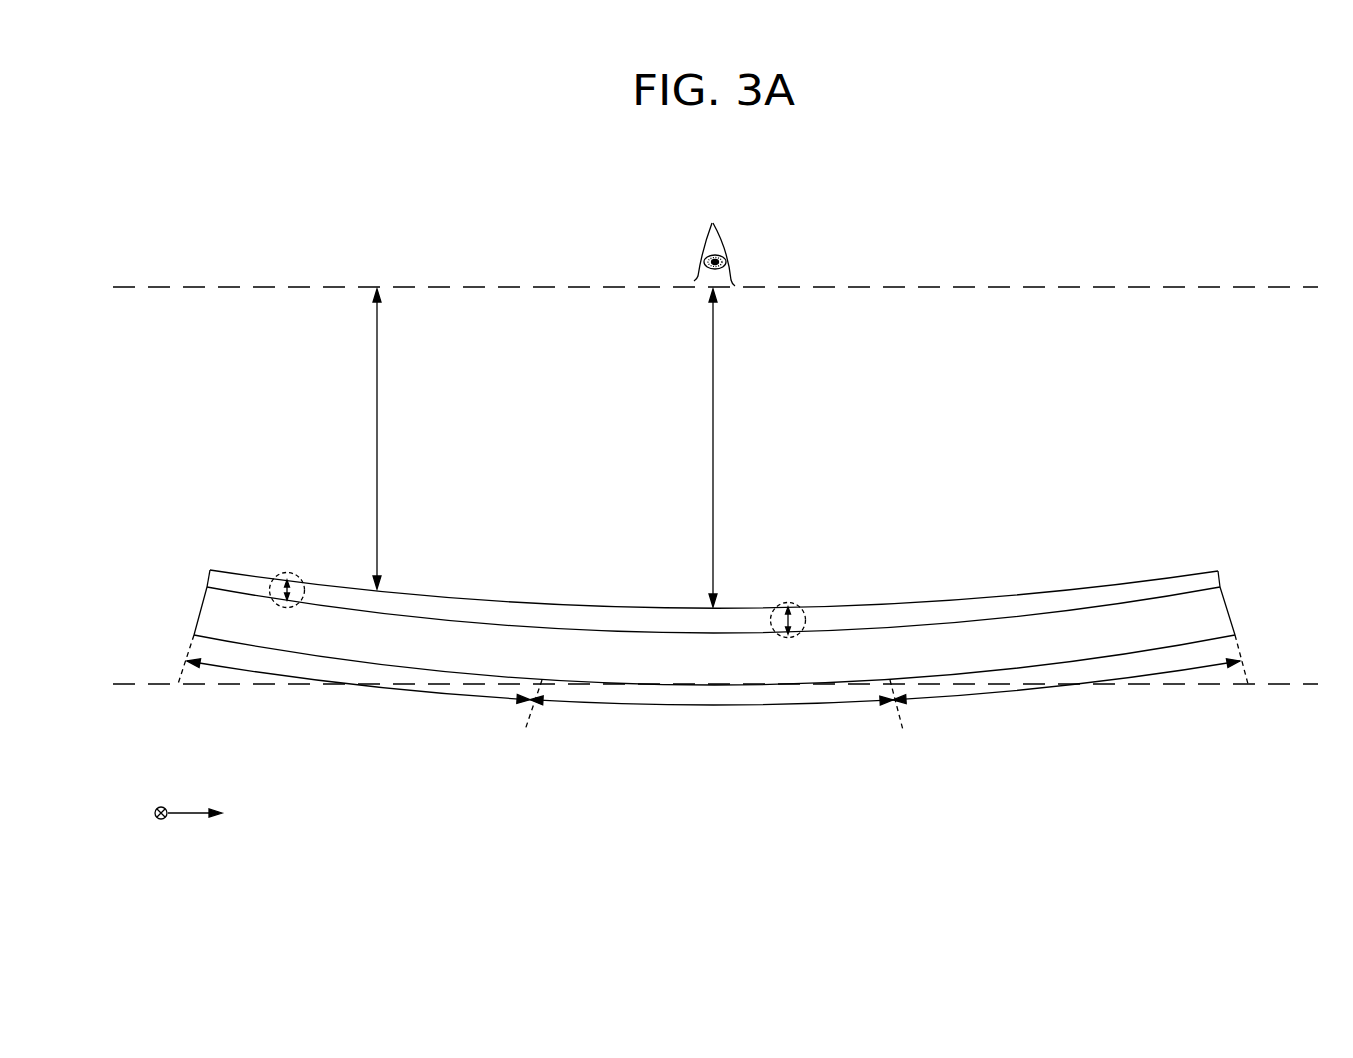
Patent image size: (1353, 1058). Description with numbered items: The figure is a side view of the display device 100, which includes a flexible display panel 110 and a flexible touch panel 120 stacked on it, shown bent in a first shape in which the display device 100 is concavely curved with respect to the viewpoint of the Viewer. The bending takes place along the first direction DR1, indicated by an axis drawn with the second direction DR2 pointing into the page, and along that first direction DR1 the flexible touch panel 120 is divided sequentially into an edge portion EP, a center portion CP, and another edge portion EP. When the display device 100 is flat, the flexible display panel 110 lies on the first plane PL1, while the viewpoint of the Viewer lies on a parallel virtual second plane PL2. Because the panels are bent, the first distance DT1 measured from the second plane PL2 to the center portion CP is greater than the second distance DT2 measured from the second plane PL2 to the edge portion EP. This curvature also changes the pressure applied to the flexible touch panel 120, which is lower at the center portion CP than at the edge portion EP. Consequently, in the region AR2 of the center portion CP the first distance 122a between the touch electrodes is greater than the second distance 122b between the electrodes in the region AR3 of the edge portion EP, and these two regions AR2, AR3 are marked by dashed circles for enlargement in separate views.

The display device 100 is at (739, 569).
The flexible display panel 110 is at (1218, 608).
The flexible touch panel 120 is at (1208, 581).
The first distance 122a is at (785, 617).
The second distance 122b is at (283, 588).
The region AR2 is at (795, 603).
The region AR3 is at (290, 573).
The first distance DT1 is at (713, 448).
The second distance DT2 is at (377, 448).
The first plane PL1 is at (158, 686).
The second plane PL2 is at (160, 289).
The edge portion EP is at (713, 688).
The center portion CP is at (714, 710).
The first direction DR1 is at (213, 812).
The second direction DR2 is at (138, 812).
The viewer Viewer is at (722, 240).